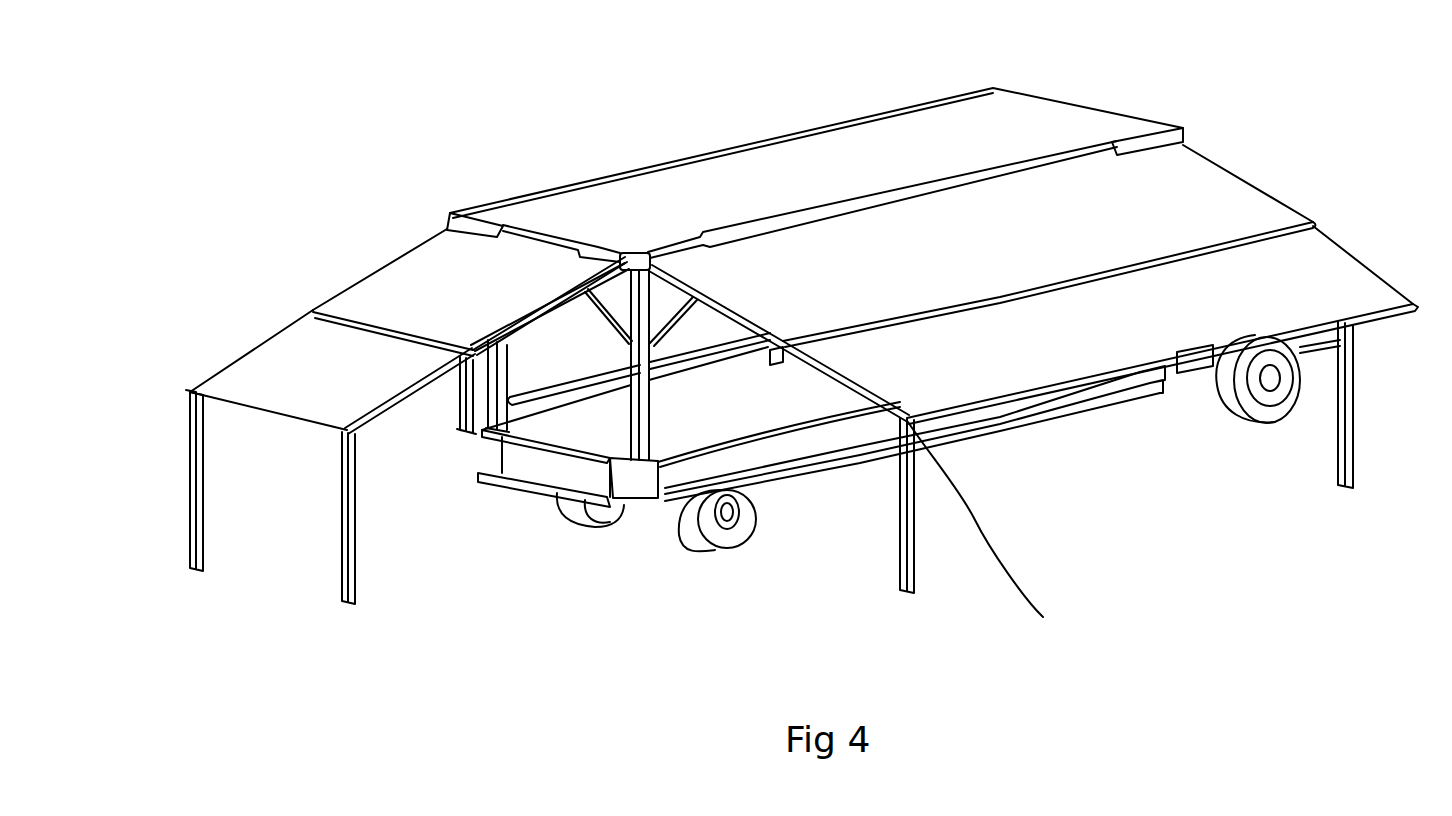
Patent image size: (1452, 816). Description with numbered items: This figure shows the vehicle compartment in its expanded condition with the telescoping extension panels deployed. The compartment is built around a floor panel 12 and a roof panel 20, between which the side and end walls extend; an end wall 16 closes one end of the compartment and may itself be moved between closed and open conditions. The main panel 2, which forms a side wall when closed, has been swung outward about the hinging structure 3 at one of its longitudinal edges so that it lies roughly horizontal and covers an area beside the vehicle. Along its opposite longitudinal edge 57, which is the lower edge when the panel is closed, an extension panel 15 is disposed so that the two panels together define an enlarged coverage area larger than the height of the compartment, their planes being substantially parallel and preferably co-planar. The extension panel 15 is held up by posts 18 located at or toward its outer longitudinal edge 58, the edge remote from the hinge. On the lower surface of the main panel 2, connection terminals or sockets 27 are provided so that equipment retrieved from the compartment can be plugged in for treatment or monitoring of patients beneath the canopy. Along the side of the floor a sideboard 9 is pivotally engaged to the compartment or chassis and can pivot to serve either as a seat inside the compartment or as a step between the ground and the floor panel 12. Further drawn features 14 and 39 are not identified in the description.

The main panel 2 is at (1299, 162).
The hinging structure 3 is at (1112, 142).
The sideboard 9 is at (807, 471).
The floor panel 12 is at (909, 442).
The extension panel 14 is at (263, 347).
The extension panel 15 is at (1113, 259).
The end wall 16 is at (415, 287).
The posts 18 is at (358, 567).
The roof panel 20 is at (880, 164).
The connectors 27 is at (995, 548).
The corner bracket 39 is at (190, 392).
The longitudinal edge 57 is at (1205, 245).
The longitudinal edge 58 is at (1384, 314).